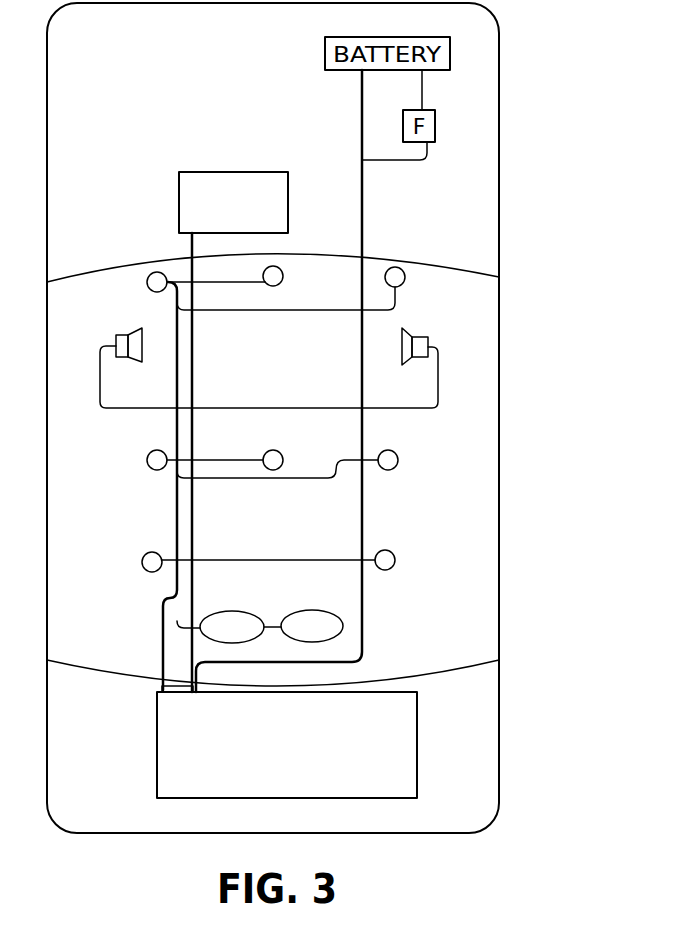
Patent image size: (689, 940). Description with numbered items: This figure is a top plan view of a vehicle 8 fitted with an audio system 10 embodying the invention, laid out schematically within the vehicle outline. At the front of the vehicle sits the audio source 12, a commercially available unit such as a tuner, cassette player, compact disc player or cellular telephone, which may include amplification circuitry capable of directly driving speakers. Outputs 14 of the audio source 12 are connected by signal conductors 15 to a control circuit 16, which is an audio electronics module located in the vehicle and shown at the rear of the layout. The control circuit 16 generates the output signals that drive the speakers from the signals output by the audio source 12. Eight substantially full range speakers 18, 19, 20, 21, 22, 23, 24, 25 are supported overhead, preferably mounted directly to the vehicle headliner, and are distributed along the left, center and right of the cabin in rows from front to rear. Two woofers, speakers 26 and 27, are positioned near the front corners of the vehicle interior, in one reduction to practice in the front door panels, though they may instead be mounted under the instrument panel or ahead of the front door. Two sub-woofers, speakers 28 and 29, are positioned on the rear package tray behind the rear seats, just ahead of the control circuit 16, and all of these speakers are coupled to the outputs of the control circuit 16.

The vehicle 8 is at (506, 68).
The audio system 10 is at (252, 170).
The audio source 12 is at (283, 172).
The outputs 14 is at (190, 250).
The signal conductors 15 is at (196, 553).
The control circuit 16 is at (157, 780).
The speaker 18 is at (148, 282).
The speaker 19 is at (283, 273).
The speaker 20 is at (404, 282).
The speaker 21 is at (147, 460).
The speaker 22 is at (283, 458).
The speaker 23 is at (398, 463).
The speaker 24 is at (144, 556).
The speaker 25 is at (395, 561).
The speaker 26 is at (121, 334).
The speaker 27 is at (420, 335).
The speaker 28 is at (248, 611).
The speaker 29 is at (312, 610).